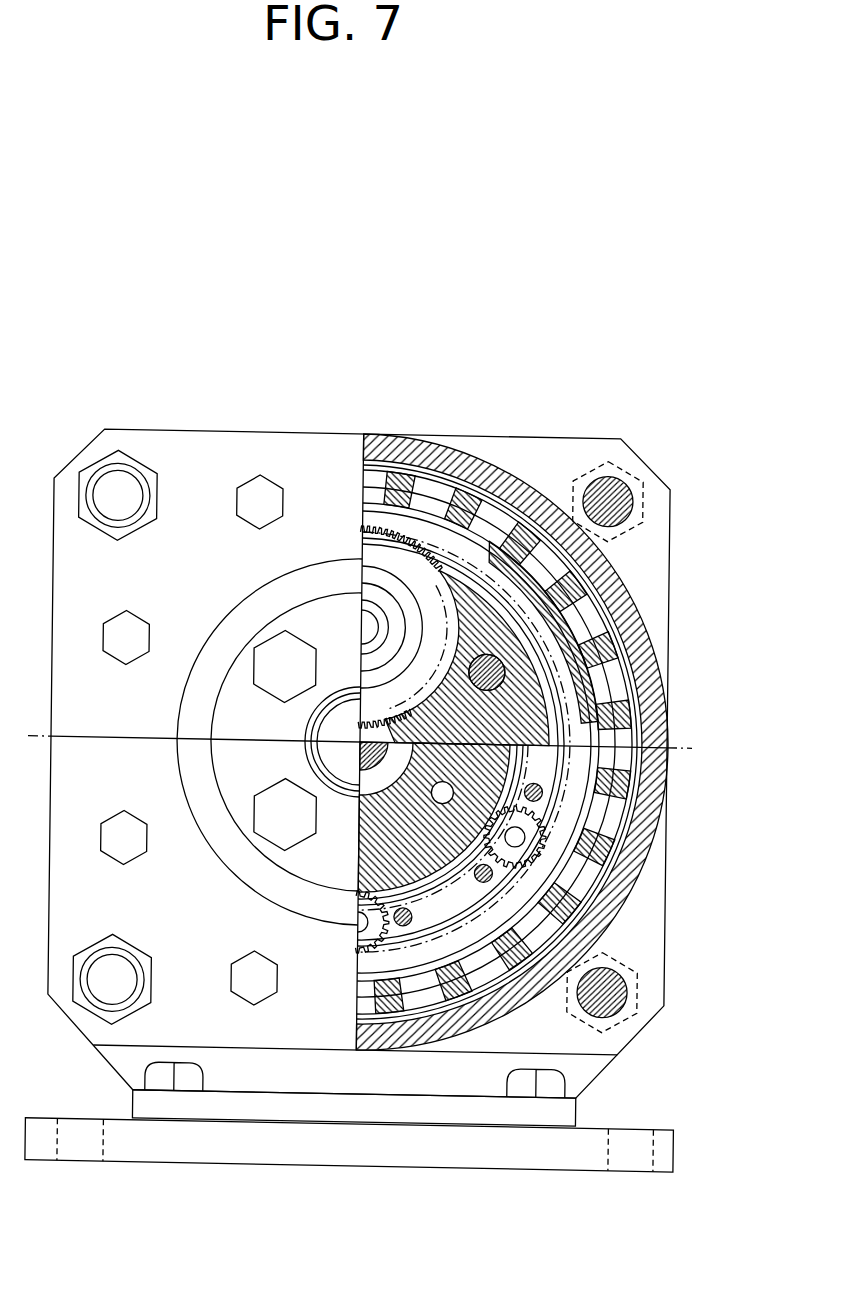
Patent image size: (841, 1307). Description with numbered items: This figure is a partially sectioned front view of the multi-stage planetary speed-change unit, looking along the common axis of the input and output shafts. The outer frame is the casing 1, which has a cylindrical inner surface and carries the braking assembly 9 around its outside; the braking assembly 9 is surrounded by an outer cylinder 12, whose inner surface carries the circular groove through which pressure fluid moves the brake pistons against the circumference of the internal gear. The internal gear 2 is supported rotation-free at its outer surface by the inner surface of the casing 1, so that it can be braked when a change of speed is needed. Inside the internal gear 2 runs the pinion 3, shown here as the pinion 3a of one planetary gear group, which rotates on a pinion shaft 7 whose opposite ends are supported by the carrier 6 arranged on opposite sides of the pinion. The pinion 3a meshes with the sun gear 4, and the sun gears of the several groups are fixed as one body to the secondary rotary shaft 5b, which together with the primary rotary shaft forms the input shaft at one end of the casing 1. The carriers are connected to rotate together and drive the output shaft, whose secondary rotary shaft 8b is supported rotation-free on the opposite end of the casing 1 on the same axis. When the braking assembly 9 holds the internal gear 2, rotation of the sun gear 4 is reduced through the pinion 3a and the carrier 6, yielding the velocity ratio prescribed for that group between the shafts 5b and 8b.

The casing 1 is at (174, 442).
The internal gear 2 is at (408, 539).
The pinion 3 is at (426, 597).
The pinion 3a is at (530, 830).
The sun gear 4 is at (358, 738).
The secondary rotary shaft 5b is at (508, 756).
The carrier 6 is at (486, 633).
The pinion shaft 7 is at (367, 620).
The secondary rotary shaft 8b is at (320, 729).
The braking assembly 9 is at (590, 876).
The outer cylinder 12 is at (595, 928).